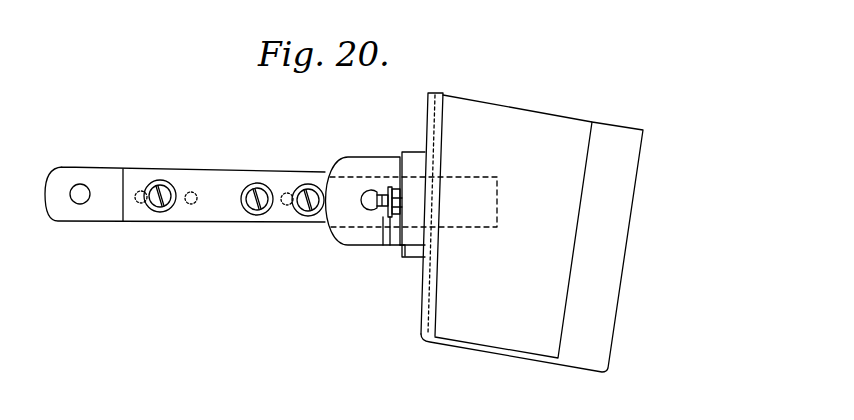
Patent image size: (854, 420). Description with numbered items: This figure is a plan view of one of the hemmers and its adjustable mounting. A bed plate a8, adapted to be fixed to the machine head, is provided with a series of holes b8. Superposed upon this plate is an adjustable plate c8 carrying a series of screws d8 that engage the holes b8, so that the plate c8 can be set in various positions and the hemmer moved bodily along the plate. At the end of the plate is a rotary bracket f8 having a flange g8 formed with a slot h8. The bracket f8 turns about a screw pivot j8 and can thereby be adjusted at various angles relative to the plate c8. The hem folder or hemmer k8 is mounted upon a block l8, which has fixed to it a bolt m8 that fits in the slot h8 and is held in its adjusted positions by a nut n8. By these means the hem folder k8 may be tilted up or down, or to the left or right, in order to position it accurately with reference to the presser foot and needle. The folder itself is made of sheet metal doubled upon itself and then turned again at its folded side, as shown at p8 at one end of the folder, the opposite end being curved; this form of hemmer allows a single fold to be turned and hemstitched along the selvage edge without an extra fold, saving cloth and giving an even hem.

The bed plate a8 is at (100, 224).
The holes b8 is at (187, 205).
The adjustable plate c8 is at (263, 217).
The screws d8 is at (165, 186).
The rotary bracket f8 is at (355, 238).
The flange g8 is at (403, 250).
The slot h8 is at (386, 180).
The screw pivot j8 is at (368, 205).
The hem folder k8 is at (486, 233).
The block l8 is at (415, 170).
The bolt m8 is at (402, 202).
The nut n8 is at (385, 246).
The turned fold of the folder p8 is at (437, 92).